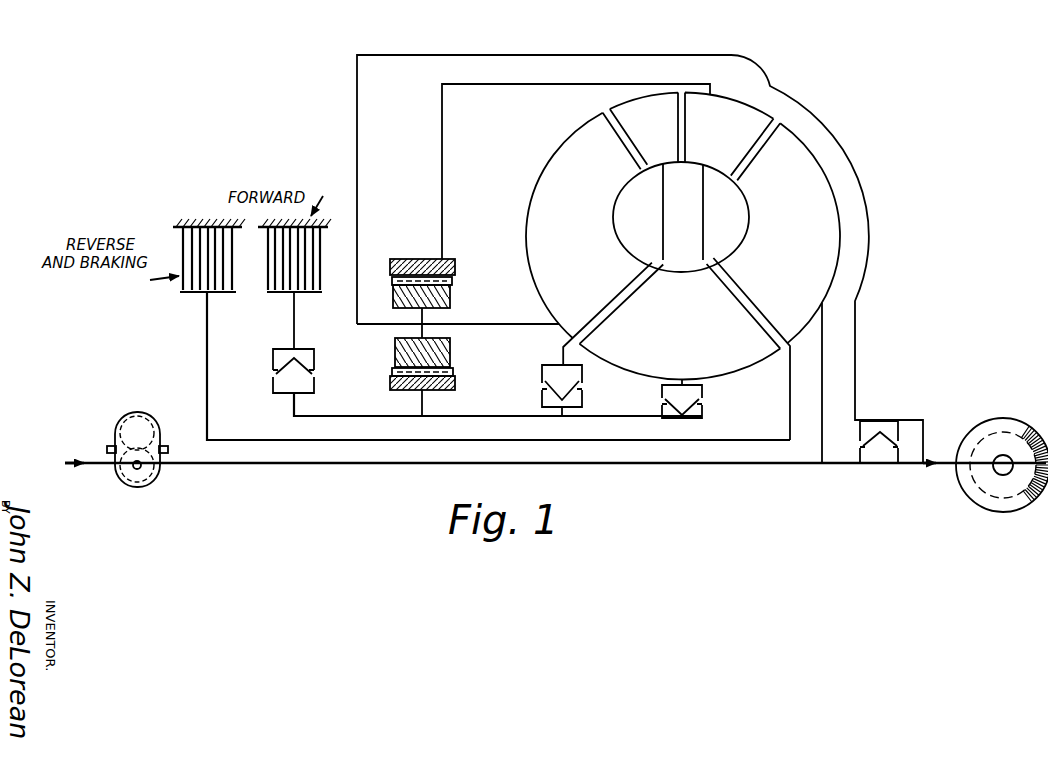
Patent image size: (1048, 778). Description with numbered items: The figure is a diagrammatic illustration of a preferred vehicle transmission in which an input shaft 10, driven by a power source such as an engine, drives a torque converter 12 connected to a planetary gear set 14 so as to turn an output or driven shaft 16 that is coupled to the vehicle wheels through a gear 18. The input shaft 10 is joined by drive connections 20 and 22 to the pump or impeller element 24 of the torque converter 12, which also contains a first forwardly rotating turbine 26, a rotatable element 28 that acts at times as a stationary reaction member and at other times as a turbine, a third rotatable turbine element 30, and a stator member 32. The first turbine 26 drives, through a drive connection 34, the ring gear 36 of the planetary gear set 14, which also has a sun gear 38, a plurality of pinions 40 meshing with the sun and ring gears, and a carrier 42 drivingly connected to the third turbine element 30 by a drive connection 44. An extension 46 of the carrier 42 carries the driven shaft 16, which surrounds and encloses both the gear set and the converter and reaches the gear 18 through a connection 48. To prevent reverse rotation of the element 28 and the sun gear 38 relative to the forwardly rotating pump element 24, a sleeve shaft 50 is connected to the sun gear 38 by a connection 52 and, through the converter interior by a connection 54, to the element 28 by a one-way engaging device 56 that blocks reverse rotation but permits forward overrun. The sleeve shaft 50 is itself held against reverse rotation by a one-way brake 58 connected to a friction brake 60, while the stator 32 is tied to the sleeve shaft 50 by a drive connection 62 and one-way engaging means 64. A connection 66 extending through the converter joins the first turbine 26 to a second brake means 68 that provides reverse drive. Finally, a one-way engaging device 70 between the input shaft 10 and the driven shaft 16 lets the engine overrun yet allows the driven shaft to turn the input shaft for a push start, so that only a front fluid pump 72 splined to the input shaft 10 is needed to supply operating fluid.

The input shaft 10 is at (90, 461).
The torque converter 12 is at (711, 258).
The planetary gear set 14 is at (432, 299).
The output or driven shaft 16 is at (456, 55).
The gear 18 is at (1005, 490).
The drive connection 20 is at (748, 466).
The drive connection 22 is at (822, 418).
The pump or impeller element 24 is at (818, 182).
The first turbine 26 is at (745, 90).
The rotatable element 28 is at (621, 112).
The third rotatable turbine element 30 is at (575, 148).
The stator member 32 is at (615, 350).
The drive connection 34 is at (462, 84).
The ring gear 36 is at (405, 262).
The sun gear 38 is at (455, 385).
The pinions 40 is at (438, 303).
The carrier 42 is at (495, 323).
The drive connection 44 is at (510, 327).
The extension 46 is at (378, 328).
The connection 48 is at (938, 461).
The sleeve shaft 50 is at (345, 394).
The connection 52 is at (420, 402).
The connection 54 is at (662, 250).
The one-way engaging device 56 is at (539, 394).
The one-way brake 58 is at (269, 366).
The friction brake 60 is at (320, 278).
The drive connection 62 is at (676, 385).
The one-way engaging means 64 is at (705, 405).
The connection 66 is at (703, 190).
The second brake means 68 is at (222, 278).
The one-way engaging device 70 is at (901, 455).
The front fluid pump 72 is at (140, 430).